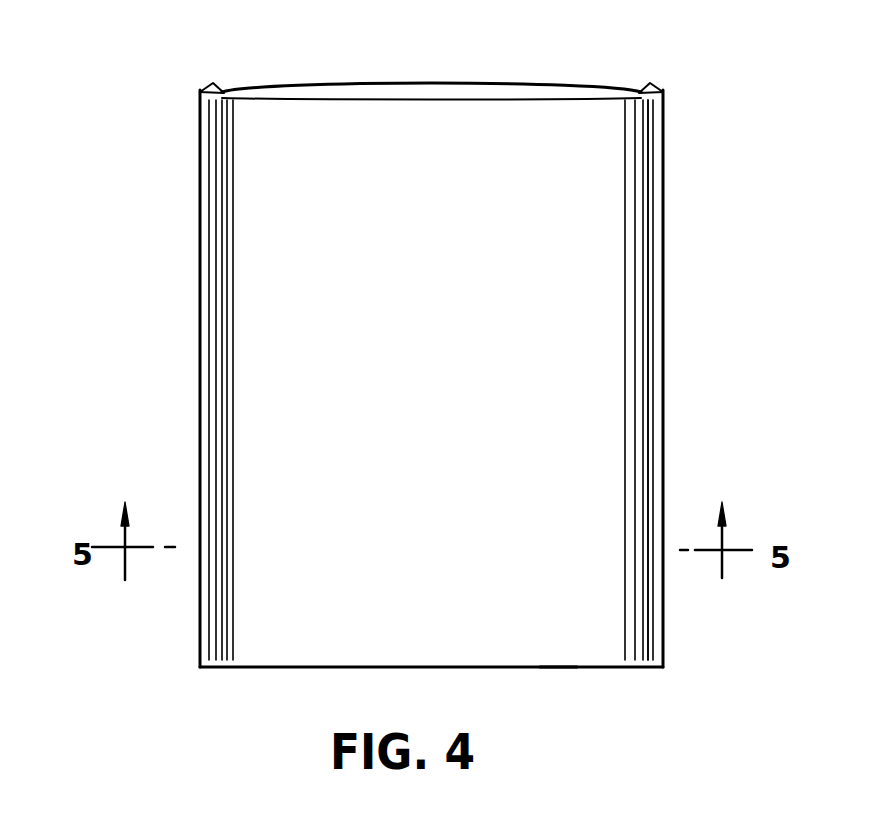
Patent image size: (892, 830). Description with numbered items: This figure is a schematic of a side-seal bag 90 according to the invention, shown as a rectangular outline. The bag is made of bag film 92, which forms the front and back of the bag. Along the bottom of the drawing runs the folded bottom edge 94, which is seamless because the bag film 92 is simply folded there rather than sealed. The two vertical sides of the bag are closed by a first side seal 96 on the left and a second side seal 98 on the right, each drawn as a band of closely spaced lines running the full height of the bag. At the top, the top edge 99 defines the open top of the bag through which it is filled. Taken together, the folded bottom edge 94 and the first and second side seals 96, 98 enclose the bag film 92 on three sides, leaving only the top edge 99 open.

The side-seal bag 90 is at (142, 224).
The bag film 92 is at (600, 242).
The folded bottom edge 94 is at (540, 667).
The first side seal 96 is at (222, 362).
The second side seal 98 is at (637, 362).
The top edge 99 is at (470, 83).